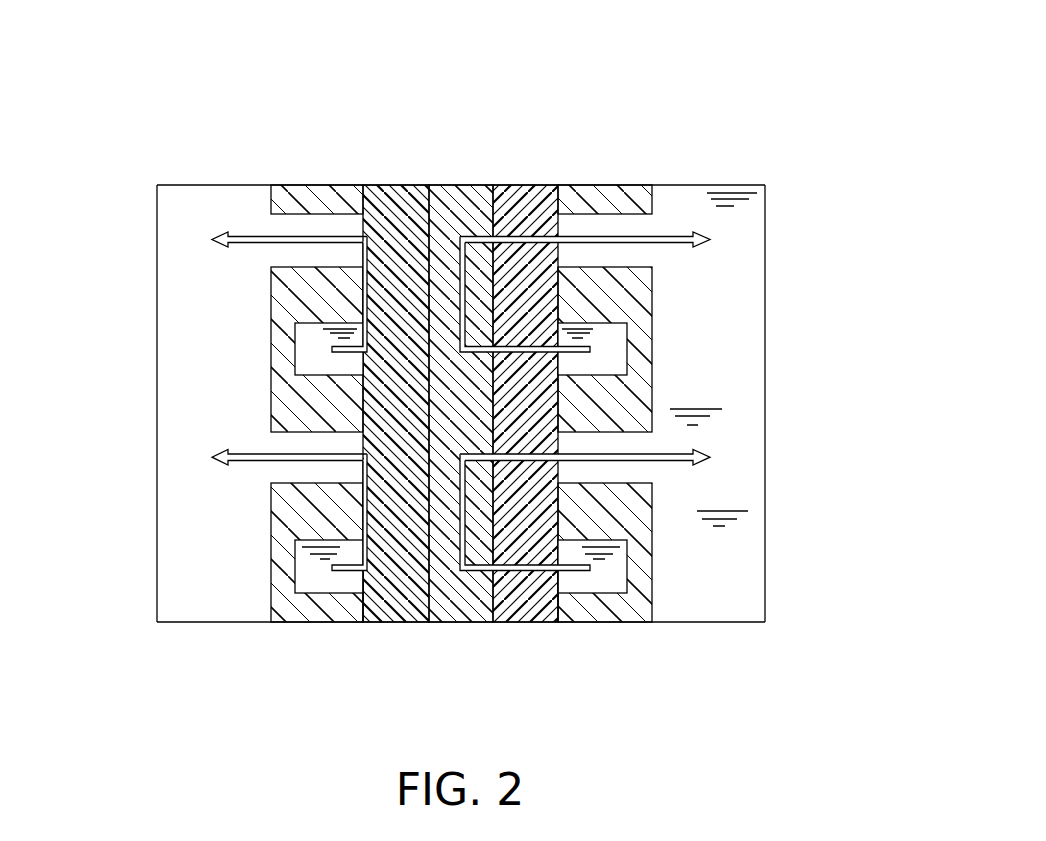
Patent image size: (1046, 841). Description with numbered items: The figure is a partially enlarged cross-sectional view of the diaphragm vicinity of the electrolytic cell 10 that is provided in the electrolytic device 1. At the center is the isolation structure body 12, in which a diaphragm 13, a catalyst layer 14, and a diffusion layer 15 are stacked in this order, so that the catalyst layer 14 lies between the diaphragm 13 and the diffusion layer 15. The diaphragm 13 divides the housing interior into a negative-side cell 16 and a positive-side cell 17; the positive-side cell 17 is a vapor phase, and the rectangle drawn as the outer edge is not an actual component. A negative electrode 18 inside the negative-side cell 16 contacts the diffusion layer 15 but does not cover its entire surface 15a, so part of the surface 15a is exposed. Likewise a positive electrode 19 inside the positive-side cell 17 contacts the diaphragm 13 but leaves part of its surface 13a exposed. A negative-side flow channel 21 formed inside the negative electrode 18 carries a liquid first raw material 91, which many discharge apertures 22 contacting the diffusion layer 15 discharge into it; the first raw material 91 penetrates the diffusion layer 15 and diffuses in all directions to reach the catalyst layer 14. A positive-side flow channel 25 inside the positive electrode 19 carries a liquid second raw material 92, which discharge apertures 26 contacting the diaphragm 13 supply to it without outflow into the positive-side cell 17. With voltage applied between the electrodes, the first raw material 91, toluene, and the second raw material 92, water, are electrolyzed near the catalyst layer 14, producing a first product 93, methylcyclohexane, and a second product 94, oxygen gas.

The electrolytic device 1 is at (720, 60).
The electrolytic cell 10 is at (740, 137).
The isolation structure body 12 is at (460, 348).
The diaphragm 13 is at (396, 207).
The surface of the diaphragm 13a is at (363, 225).
The catalyst layer 14 is at (467, 207).
The diffusion layer 15 is at (525, 367).
The surface of the diffusion layer 15a is at (558, 225).
The negative-side cell 16 is at (740, 593).
The positive-side cell 17 is at (182, 577).
The negative electrode 18 is at (613, 290).
The positive electrode 19 is at (313, 290).
The negative-side flow channel 21 is at (606, 324).
The discharge apertures 22 is at (557, 582).
The positive-side flow channel 25 is at (317, 323).
The discharge apertures 26 is at (363, 583).
The first raw material 91 is at (605, 358).
The second raw material 92 is at (318, 358).
The first product 93 is at (740, 556).
The second product 94 is at (182, 547).